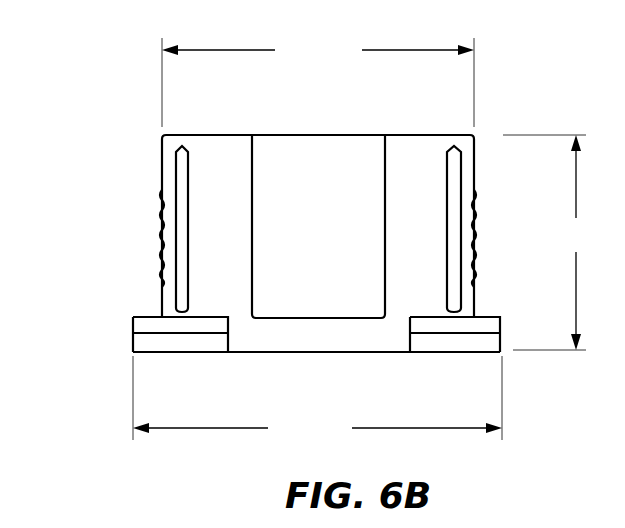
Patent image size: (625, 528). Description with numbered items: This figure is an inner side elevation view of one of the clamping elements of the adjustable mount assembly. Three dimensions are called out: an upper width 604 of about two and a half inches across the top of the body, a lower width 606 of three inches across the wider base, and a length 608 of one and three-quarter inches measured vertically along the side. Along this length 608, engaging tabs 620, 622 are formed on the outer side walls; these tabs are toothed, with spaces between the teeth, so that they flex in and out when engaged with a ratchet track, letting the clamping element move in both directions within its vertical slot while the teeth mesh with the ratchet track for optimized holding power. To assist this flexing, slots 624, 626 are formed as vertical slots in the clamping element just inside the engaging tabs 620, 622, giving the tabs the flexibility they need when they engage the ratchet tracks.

The upper width 604 is at (318, 82).
The lower width 606 is at (317, 398).
The length 608 is at (547, 242).
The engaging tab 620 is at (476, 182).
The engaging tab 622 is at (160, 186).
The slot 624 is at (445, 169).
The slot 626 is at (186, 172).